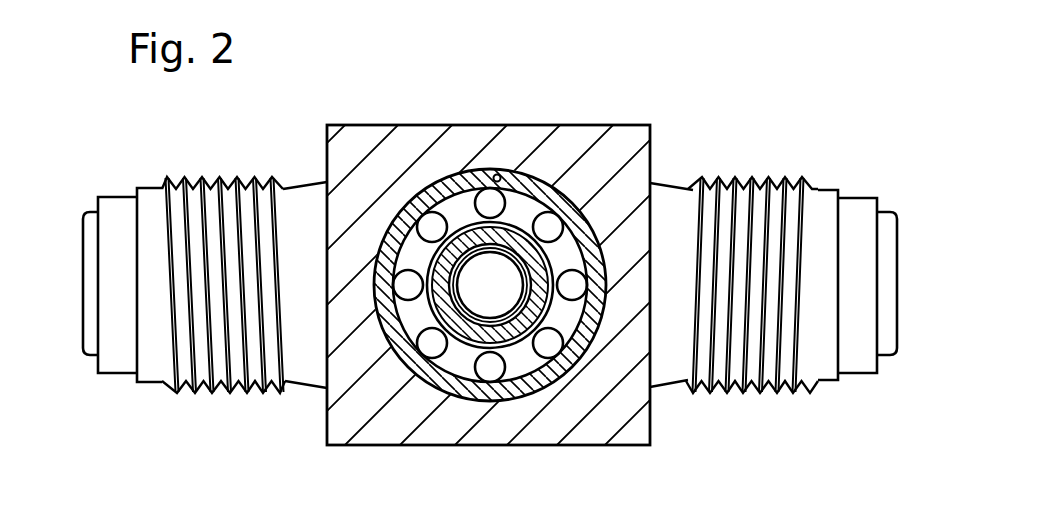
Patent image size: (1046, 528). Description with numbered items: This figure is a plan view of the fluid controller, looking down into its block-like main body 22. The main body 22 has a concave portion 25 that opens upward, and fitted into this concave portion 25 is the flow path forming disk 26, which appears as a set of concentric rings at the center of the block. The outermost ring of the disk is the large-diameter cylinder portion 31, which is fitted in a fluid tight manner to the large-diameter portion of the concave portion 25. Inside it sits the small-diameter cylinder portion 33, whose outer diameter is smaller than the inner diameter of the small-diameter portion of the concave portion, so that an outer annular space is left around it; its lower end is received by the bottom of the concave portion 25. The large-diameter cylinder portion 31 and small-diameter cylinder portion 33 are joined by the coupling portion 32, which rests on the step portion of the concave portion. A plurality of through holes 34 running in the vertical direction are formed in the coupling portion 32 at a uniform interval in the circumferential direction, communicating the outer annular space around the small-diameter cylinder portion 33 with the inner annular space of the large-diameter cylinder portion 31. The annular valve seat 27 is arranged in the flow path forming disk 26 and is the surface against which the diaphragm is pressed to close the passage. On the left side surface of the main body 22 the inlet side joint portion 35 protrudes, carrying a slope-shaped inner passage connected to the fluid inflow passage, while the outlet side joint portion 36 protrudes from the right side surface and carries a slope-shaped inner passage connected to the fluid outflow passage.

The main body 22 is at (475, 318).
The concave portion 25 is at (500, 175).
The flow path forming disk 26 is at (485, 286).
The annular valve seat 27 is at (468, 227).
The large-diameter cylinder portion 31 is at (430, 372).
The coupling portion 32 is at (463, 367).
The small-diameter cylinder portion 33 is at (530, 380).
The through holes 34 is at (537, 215).
The inlet side joint portion 35 is at (182, 390).
The outlet side joint portion 36 is at (798, 392).